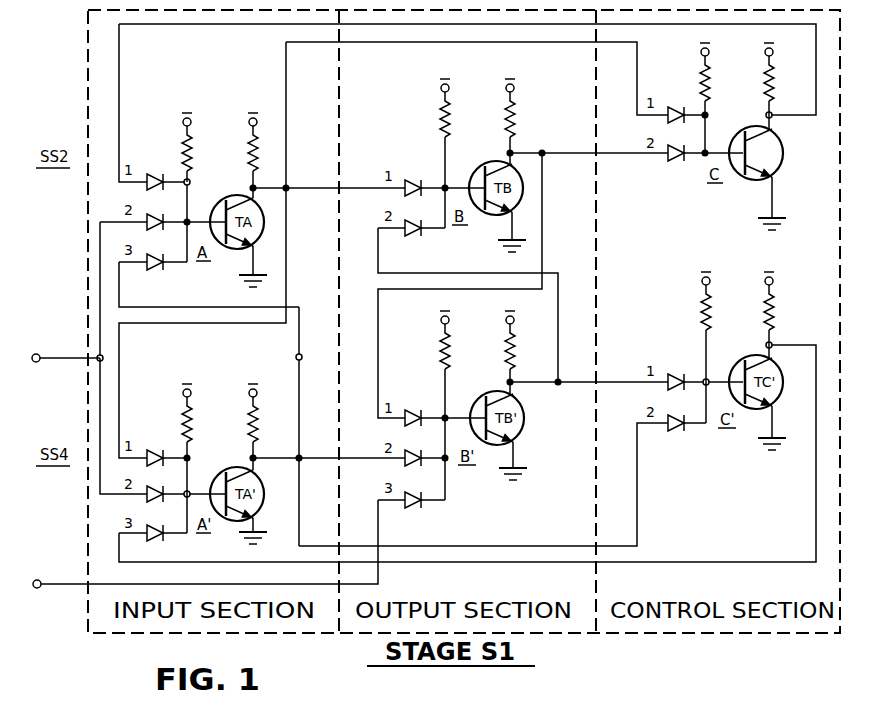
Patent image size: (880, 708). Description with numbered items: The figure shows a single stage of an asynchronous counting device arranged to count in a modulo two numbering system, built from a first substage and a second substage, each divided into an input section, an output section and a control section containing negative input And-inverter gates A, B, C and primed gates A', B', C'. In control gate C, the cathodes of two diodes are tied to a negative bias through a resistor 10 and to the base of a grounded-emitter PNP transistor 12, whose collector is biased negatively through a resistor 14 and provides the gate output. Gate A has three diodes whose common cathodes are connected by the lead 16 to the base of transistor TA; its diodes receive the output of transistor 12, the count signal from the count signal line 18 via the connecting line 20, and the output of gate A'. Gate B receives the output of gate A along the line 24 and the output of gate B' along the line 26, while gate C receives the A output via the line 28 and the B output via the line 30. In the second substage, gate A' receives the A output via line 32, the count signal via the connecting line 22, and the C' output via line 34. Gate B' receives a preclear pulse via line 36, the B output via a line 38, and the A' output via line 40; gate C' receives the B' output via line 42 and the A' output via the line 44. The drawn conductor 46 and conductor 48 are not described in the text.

The resistor 10 is at (700, 85).
The PNP transistor 12 is at (752, 128).
The resistor 14 is at (766, 85).
The lead 16 is at (200, 222).
The count signal line 18 is at (72, 358).
The connecting line 20 is at (97, 294).
The connecting line 22 is at (98, 421).
The line 24 is at (350, 188).
The line 26 is at (556, 340).
The line 28 is at (512, 42).
The line 30 is at (525, 153).
The line 32 is at (286, 268).
The line 34 is at (816, 505).
The line 36 is at (72, 584).
The line 38 is at (543, 245).
The line 40 is at (352, 462).
The line 42 is at (530, 382).
The line 44 is at (637, 492).
The conductor from transistor TC to gate A 46 is at (795, 115).
The output conductor of transistor TA' 48 is at (296, 357).